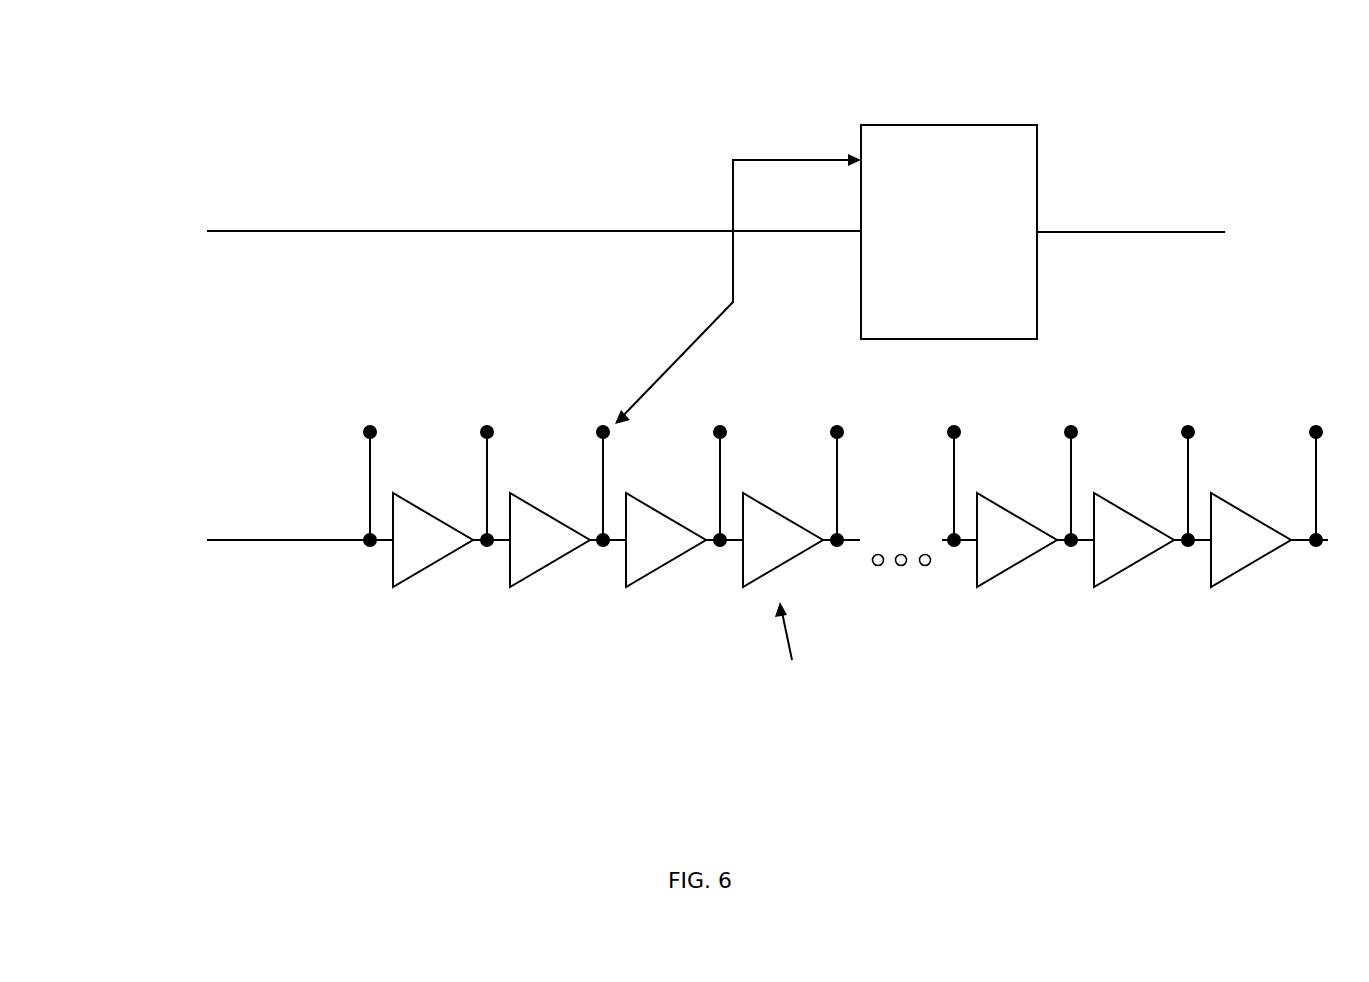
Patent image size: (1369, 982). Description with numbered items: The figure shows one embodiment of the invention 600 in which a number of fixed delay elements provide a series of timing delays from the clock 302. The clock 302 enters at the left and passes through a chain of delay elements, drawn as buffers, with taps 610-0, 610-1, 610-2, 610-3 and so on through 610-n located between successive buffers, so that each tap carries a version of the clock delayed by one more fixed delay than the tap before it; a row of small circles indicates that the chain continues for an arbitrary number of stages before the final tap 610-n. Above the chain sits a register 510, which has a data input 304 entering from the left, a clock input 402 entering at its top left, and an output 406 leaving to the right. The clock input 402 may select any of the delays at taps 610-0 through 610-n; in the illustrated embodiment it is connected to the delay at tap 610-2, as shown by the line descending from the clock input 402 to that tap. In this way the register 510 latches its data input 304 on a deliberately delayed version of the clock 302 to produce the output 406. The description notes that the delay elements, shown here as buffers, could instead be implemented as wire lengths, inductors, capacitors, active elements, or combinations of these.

The embodiment of the invention 600 is at (1166, 27).
The register 510 is at (949, 251).
The input Dx 304 is at (483, 228).
The output Yx' 406 is at (1201, 230).
The clock input Clkint 402 is at (738, 269).
The clock Clk 302 is at (242, 553).
The timing delay tap 610-0 is at (363, 467).
The timing delay tap 610-1 is at (485, 467).
The timing delay tap 610-2 is at (583, 467).
The timing delay tap 610-3 is at (722, 467).
The timing delay tap 610-n is at (1315, 473).